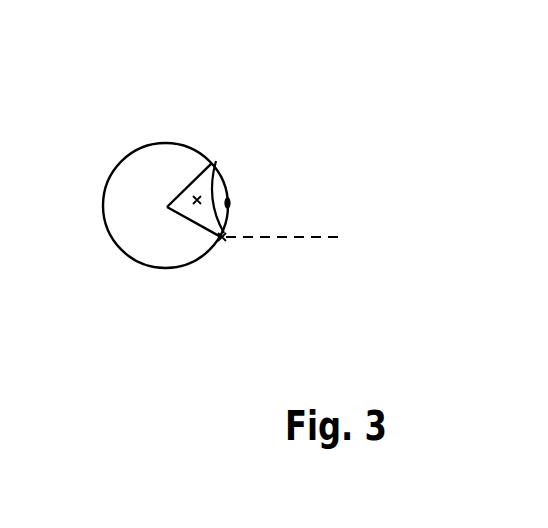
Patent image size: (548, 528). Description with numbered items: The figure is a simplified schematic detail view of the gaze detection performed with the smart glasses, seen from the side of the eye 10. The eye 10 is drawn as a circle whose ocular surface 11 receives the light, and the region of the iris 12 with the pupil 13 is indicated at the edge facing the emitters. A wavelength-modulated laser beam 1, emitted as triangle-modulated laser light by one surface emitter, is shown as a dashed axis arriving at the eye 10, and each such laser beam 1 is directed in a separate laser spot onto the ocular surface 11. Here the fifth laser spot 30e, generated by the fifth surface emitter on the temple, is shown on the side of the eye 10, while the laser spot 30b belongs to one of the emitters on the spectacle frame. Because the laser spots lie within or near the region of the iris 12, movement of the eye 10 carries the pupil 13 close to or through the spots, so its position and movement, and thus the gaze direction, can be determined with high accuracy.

The eye 10 is at (133, 118).
The ocular surface 11 is at (240, 162).
The iris 12 is at (212, 163).
The pupil 13 is at (230, 203).
The fifth laser spot 30e is at (197, 193).
The laser spot 30b is at (222, 242).
The laser beam 1 is at (287, 240).